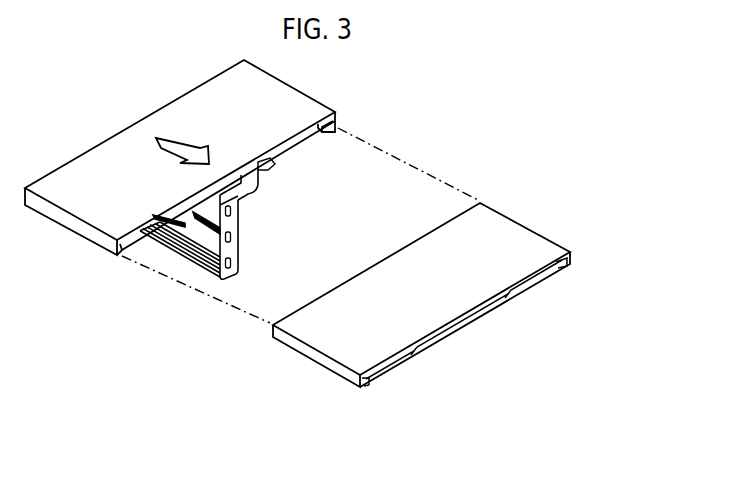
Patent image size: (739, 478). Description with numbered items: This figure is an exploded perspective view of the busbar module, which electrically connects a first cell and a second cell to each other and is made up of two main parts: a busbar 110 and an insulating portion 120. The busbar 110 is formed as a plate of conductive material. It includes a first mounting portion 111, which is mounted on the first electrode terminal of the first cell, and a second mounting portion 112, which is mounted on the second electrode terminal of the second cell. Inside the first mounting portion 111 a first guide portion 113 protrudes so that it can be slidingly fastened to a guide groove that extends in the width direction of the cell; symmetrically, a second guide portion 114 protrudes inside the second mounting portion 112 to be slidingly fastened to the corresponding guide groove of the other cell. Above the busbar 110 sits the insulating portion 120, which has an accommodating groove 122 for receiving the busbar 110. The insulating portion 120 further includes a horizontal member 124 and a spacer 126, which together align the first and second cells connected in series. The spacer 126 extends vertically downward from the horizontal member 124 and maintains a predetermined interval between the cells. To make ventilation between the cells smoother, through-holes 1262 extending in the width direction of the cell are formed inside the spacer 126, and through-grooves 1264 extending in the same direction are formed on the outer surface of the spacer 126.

The busbar 110 is at (535, 245).
The first mounting portion 111 is at (392, 365).
The second mounting portion 112 is at (537, 280).
The first guide portion 113 is at (368, 380).
The second guide portion 114 is at (560, 268).
The insulating portion 120 is at (297, 103).
The accommodating groove 122 is at (273, 162).
The horizontal member 124 is at (253, 183).
The spacer 126 is at (227, 220).
The through-holes 1262 is at (228, 238).
The through-grooves 1264 is at (236, 260).